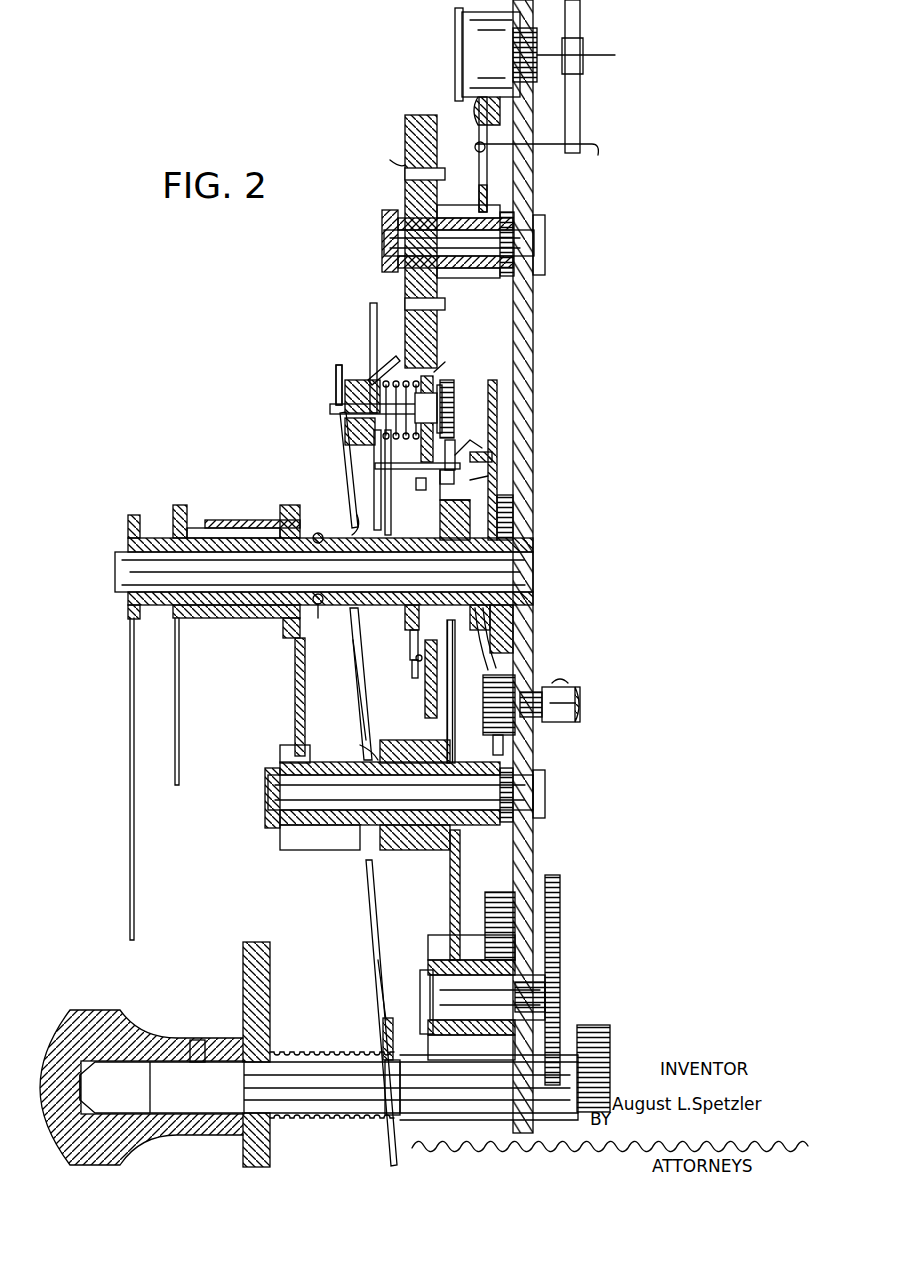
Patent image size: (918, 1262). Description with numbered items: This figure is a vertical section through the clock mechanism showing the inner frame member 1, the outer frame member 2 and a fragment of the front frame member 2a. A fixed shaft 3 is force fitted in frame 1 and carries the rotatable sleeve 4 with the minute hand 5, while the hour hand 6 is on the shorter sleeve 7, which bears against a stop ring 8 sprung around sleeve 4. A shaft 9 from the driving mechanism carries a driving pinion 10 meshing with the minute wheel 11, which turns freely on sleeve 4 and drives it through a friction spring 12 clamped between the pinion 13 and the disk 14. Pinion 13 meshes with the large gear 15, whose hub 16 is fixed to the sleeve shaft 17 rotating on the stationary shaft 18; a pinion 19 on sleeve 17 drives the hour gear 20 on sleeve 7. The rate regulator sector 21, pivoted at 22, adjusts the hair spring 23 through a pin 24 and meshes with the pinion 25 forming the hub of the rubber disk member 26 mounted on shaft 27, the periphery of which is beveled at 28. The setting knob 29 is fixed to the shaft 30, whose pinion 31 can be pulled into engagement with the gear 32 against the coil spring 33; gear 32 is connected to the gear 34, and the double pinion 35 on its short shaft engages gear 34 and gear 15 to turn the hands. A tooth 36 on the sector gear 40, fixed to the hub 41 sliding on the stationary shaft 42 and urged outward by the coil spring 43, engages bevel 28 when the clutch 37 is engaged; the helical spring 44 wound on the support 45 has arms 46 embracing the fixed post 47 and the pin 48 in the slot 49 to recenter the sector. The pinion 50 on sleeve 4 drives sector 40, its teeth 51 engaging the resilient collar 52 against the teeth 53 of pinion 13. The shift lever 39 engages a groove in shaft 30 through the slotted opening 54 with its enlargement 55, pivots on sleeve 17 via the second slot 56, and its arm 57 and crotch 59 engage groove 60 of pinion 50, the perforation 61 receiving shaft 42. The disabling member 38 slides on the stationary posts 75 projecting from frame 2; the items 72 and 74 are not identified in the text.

The inner frame member 1 is at (534, 372).
The outer frame member 2 is at (441, 369).
The front frame member 2a is at (248, 987).
The fixed post or shaft 3 is at (118, 573).
The sleeve 4 is at (240, 614).
The minute hand 5 is at (130, 774).
The hour hand 6 is at (180, 749).
The sleeve 7 is at (278, 625).
The stop ring 8 is at (320, 614).
The shaft 9 is at (572, 683).
The driving pinion 10 is at (492, 705).
The minute gear or wheel 11 is at (493, 742).
The friction spring 12 is at (486, 649).
The pinion 13 is at (482, 512).
The disk 14 is at (513, 630).
The large gear 15 is at (460, 882).
The hub 16 is at (408, 752).
The sleeve shaft 17 is at (478, 822).
The stationary shaft 18 is at (272, 797).
The pinion 19 is at (282, 749).
The hour gear 20 is at (295, 677).
The sector 21 is at (478, 193).
The pivot 22 is at (478, 44).
The hair spring 23 is at (575, 103).
The pin 24 is at (592, 150).
The pinion 25 is at (460, 278).
The disk shaped member 26 is at (395, 160).
The stationary shaft 27 is at (386, 243).
The beveled periphery 28 is at (405, 122).
The setting knob 29 is at (88, 1012).
The shaft 30 is at (462, 1102).
The pinion 31 is at (588, 1025).
The gear 32 is at (560, 929).
The coil spring 33 is at (332, 1122).
The gear 34 is at (500, 905).
The double pinion 35 is at (440, 937).
The tooth 36 is at (378, 362).
The clutch mechanism 37 is at (408, 627).
The disabling member 38 is at (412, 673).
The shift lever 39 is at (375, 915).
The sector shaped operating gear 40 is at (370, 309).
The hub member 41 is at (340, 363).
The stationary shaft 42 is at (346, 422).
The coil spring 43 is at (401, 419).
The helical spring 44 is at (432, 382).
The support 45 is at (450, 399).
The spring arms 46 is at (455, 471).
The fixed post 47 is at (452, 439).
The pin 48 is at (375, 475).
The semi-circular slot 49 is at (418, 477).
The pinion 50 is at (360, 652).
The teeth 51 is at (396, 527).
The collar or washer 52 is at (416, 657).
The teeth 53 is at (478, 487).
The slotted opening 54 is at (392, 1029).
The circular enlargement 55 is at (380, 979).
The second slotted opening 56 is at (366, 742).
The arm 57 is at (337, 385).
The crotch portion 59 is at (356, 522).
The groove 60 is at (356, 637).
The perforation 61 is at (338, 402).
The lever 72 is at (470, 440).
The pin 74 is at (494, 454).
The stationary posts or pins 75 is at (448, 685).